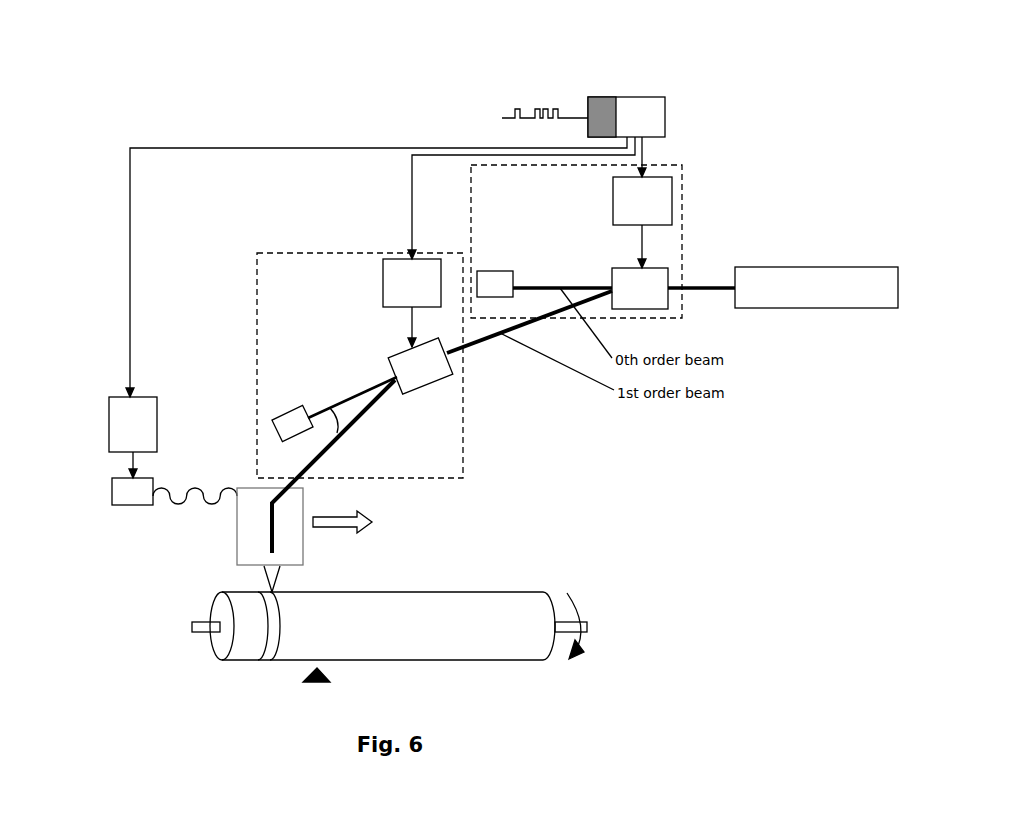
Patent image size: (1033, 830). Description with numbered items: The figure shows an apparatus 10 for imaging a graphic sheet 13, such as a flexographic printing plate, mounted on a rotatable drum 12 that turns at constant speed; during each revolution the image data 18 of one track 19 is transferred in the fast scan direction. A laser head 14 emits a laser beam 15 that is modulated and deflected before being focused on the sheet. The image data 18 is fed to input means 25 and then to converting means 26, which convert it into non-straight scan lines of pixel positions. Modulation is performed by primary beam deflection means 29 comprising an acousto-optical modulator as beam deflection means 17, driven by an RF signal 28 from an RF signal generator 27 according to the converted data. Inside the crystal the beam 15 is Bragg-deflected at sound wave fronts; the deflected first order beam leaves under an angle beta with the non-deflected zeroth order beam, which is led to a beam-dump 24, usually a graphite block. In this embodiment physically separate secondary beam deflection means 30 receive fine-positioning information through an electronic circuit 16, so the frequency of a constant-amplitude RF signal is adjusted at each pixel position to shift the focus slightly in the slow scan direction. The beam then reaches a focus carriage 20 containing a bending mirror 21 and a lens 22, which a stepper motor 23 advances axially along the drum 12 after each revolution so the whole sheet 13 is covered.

The apparatus 10 is at (112, 50).
The rotatable drum 12 is at (318, 682).
The graphic sheet 13 is at (422, 647).
The laser head 14 is at (823, 275).
The laser beam 15 is at (697, 285).
The electronic circuit 16 is at (113, 415).
The beam deflection means 17 is at (655, 277).
The image data 18 is at (505, 103).
The track 19 is at (275, 647).
The focus carriage 20 is at (305, 547).
The bending mirror 21 is at (265, 498).
The lens 22 is at (260, 559).
The stepper motor 23 is at (132, 500).
The beam-dump 24 is at (492, 273).
The input means 25 is at (606, 97).
The converting means 26 is at (655, 112).
The RF signal generator 27 is at (660, 190).
The RF signal 28 is at (640, 239).
The primary beam deflection means 29 is at (471, 207).
The secondary beam deflection means 30 is at (255, 368).